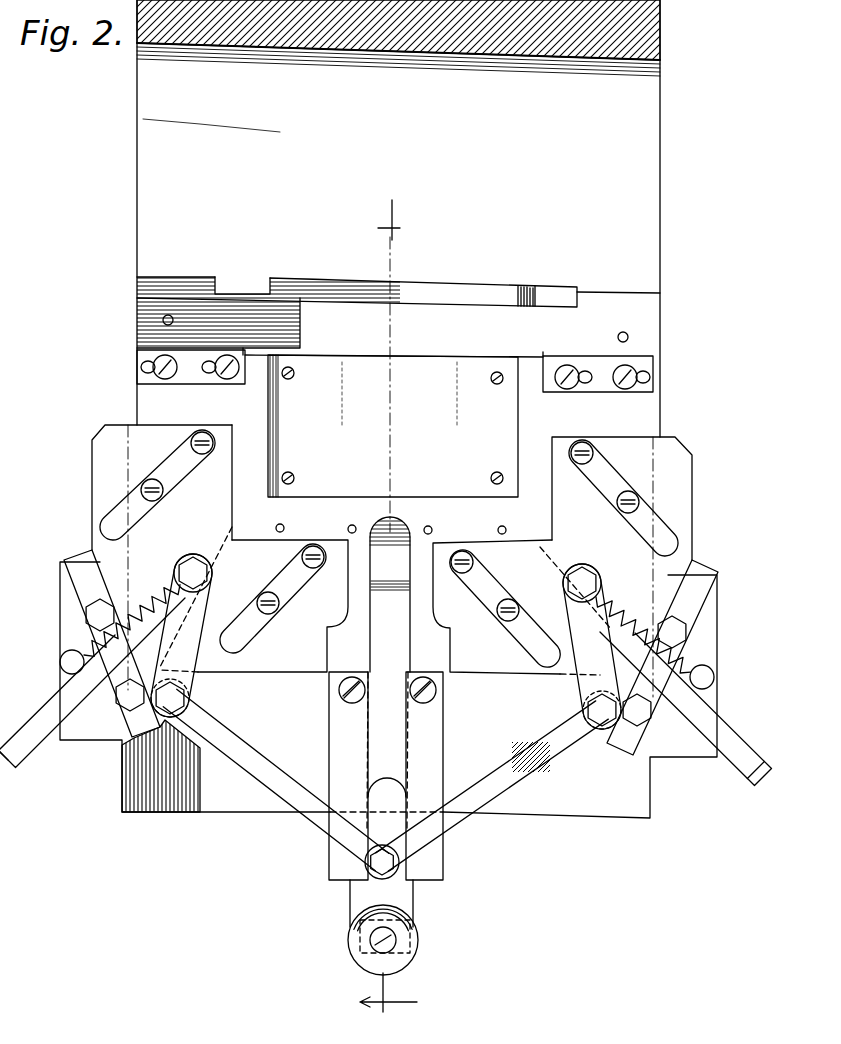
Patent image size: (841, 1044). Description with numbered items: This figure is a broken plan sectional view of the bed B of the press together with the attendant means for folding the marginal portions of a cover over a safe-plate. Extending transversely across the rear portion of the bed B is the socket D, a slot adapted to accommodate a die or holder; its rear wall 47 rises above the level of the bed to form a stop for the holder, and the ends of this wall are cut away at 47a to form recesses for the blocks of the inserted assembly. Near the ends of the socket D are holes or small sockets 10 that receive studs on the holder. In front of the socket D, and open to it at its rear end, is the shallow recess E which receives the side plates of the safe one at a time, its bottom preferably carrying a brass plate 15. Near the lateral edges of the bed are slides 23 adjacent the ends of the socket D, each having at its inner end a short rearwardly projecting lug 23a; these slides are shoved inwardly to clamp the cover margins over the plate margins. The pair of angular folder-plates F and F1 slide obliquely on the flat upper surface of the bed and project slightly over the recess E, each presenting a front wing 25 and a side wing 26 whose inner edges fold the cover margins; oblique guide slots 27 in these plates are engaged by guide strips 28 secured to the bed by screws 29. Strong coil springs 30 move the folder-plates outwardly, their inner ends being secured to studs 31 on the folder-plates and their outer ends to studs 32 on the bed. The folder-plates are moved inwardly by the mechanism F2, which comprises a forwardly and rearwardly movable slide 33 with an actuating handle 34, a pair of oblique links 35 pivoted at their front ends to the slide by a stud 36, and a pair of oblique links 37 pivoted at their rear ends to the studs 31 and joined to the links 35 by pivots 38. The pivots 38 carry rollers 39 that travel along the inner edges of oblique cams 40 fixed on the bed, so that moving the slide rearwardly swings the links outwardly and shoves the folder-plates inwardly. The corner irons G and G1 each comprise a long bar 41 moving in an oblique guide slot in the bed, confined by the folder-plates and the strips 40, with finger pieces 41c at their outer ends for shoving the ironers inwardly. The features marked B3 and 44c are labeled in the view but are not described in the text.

The holes or small sockets 10 is at (168, 315).
The brass plate 15 is at (328, 372).
The slides 23 is at (205, 384).
The rearwardly projecting lugs 23a is at (245, 352).
The front wing 25 is at (290, 547).
The side wing 26 is at (228, 473).
The oblique guide slots 27 is at (120, 515).
The guide strips 28 is at (158, 472).
The screws 29 is at (193, 450).
The coil springs 30 is at (180, 582).
The studs 31 is at (196, 558).
The studs 32 is at (62, 663).
The slide 33 is at (383, 795).
The actuating handle 34 is at (418, 945).
The oblique links 35 is at (268, 765).
The stud 36 is at (370, 880).
The oblique links 37 is at (200, 606).
The pivots 38 is at (186, 700).
The rollers 39 is at (172, 735).
The oblique guide members or cams 40 is at (82, 597).
The long bar 41 is at (47, 716).
The finger pieces 41c is at (14, 765).
The hole 44c is at (502, 527).
The rear wall 47 is at (525, 290).
The cut-away ends 47a is at (220, 286).
The bed B is at (656, 423).
The base flange B3 is at (554, 42).
The socket D is at (448, 312).
The shallow socket or recess E is at (393, 426).
The folder-plate F is at (95, 507).
The folder-plate F1 is at (680, 507).
The mechanism for actuating folder-plates F2 is at (410, 903).
The corner iron G is at (86, 715).
The corner iron G1 is at (720, 733).